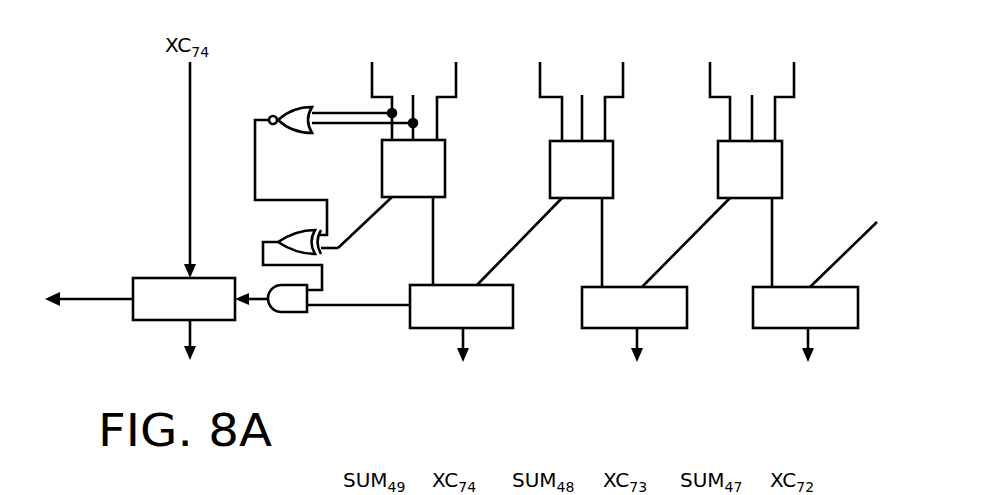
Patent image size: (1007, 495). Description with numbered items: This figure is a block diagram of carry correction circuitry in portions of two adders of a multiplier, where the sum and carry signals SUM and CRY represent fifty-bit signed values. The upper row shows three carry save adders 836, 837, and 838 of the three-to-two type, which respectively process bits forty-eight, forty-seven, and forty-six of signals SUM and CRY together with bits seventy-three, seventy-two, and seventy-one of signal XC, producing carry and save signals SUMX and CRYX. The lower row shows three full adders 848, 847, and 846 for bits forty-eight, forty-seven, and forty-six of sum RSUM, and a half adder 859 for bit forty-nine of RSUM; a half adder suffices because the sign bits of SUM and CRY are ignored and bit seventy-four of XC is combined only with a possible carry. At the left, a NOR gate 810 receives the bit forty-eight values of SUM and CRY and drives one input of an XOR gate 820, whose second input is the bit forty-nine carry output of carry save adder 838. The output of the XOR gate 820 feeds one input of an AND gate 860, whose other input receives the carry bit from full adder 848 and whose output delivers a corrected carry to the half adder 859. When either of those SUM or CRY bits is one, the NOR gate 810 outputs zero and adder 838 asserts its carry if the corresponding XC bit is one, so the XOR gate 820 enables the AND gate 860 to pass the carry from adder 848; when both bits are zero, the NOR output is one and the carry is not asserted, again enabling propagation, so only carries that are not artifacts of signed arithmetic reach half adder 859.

The NOR gate 810 is at (302, 107).
The XOR gate 820 is at (295, 231).
The 3:2 carry save adder 836 is at (818, 143).
The 3:2 carry save adder 837 is at (650, 143).
The 3:2 carry save adder 838 is at (445, 157).
The full adder 846 is at (777, 329).
The full adder 847 is at (607, 329).
The full adder 848 is at (437, 329).
The half adder 859 is at (165, 322).
The AND gate 860 is at (293, 313).